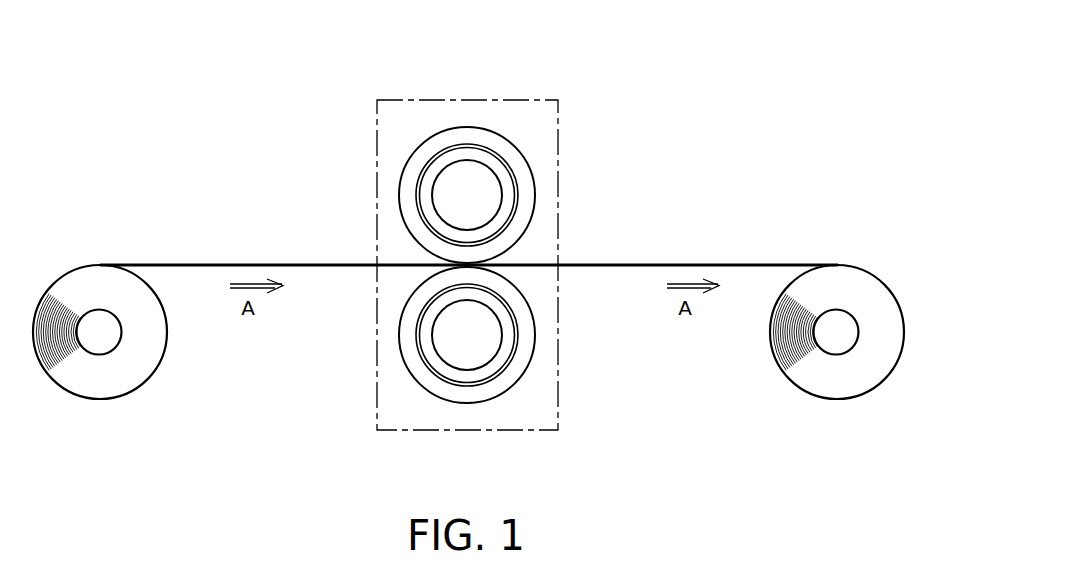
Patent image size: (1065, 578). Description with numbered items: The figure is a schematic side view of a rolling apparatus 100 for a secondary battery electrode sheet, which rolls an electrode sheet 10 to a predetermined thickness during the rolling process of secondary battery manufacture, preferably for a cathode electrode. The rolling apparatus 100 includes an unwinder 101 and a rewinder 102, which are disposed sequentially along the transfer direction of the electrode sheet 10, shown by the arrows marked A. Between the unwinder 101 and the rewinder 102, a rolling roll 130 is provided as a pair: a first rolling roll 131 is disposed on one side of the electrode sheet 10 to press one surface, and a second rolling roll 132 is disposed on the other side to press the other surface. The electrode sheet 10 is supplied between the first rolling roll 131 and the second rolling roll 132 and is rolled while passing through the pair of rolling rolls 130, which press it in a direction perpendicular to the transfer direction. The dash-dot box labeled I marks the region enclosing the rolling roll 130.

The rolling apparatus 100 is at (488, 50).
The electrode sheet 10 is at (178, 265).
The unwinder 101 is at (101, 398).
The rewinder 102 is at (833, 398).
The rolling roll 130 is at (540, 265).
The first rolling roll 131 is at (530, 192).
The second rolling roll 132 is at (530, 337).
The processing region I is at (377, 146).